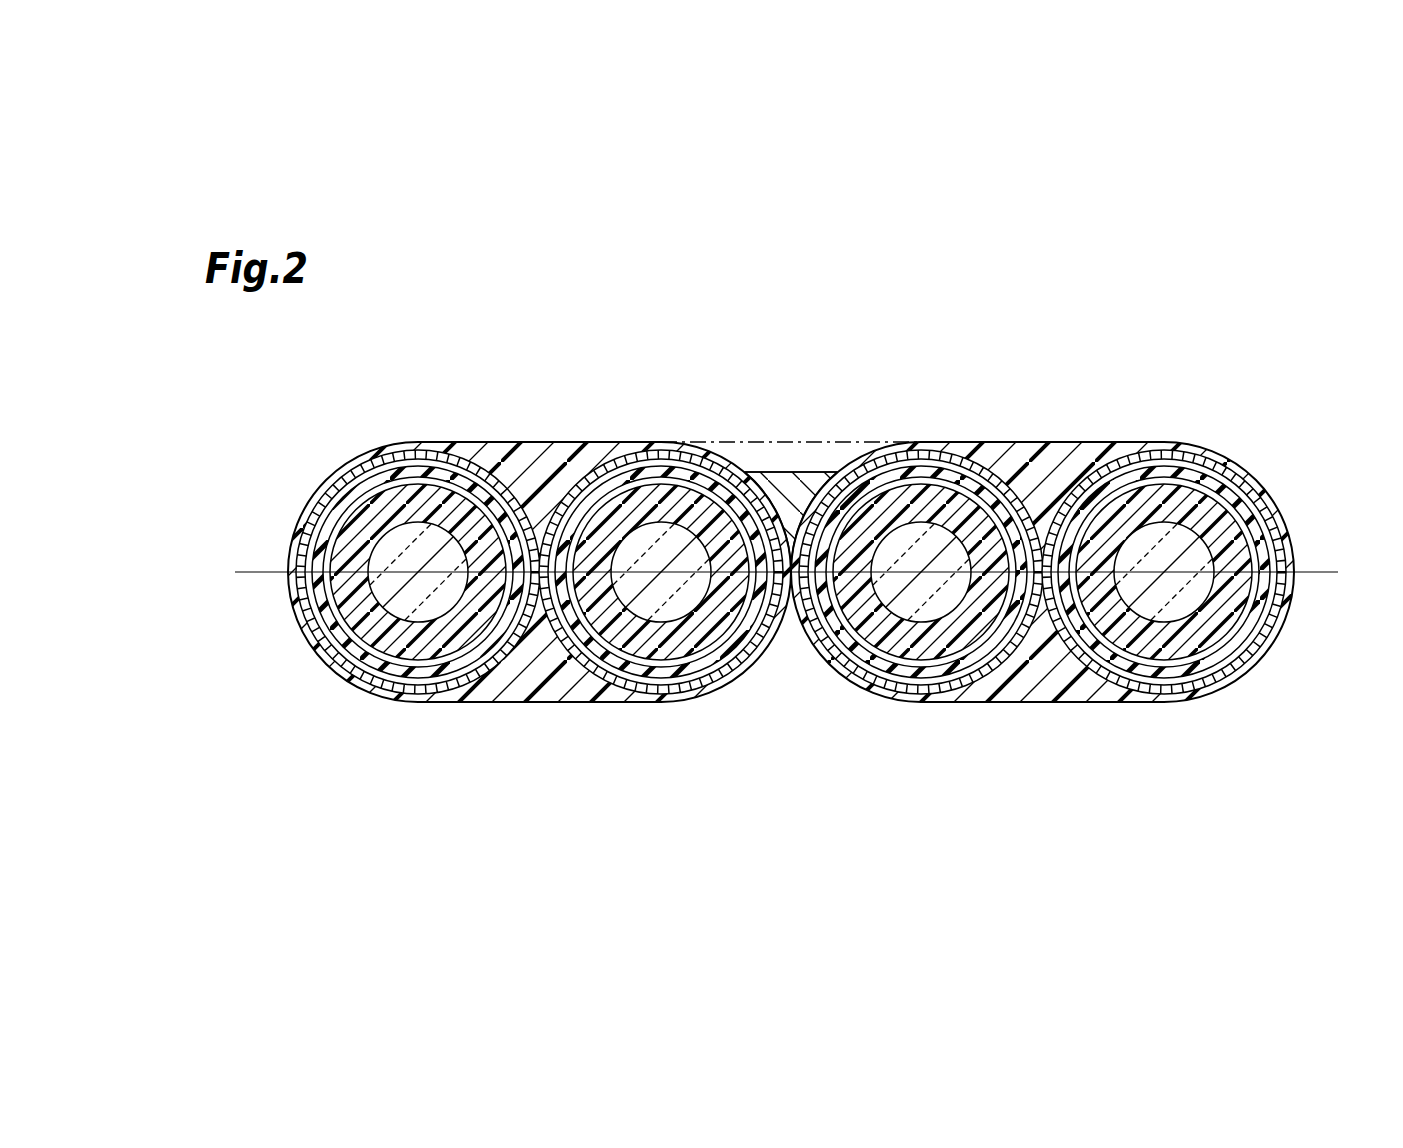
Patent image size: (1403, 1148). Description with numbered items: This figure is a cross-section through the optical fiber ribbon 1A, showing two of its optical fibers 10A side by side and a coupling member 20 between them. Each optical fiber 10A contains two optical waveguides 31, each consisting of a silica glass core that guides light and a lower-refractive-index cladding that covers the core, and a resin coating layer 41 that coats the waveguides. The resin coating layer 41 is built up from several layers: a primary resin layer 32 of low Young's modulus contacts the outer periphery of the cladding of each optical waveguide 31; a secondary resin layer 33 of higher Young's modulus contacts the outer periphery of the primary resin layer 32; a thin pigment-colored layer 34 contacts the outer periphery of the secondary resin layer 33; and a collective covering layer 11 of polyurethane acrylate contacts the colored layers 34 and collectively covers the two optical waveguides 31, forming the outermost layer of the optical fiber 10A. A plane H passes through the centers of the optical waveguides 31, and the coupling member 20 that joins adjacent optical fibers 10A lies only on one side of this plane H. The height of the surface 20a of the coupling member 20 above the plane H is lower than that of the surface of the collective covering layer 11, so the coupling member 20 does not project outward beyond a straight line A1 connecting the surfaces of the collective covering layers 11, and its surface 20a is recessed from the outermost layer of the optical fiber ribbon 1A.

The optical fiber ribbon 1A is at (1222, 350).
The optical fiber 10A is at (791, 553).
The collective covering layer 11 is at (1026, 452).
The coupling member 20 is at (797, 470).
The surface of the coupling member 20a is at (779, 447).
The straight line A1 is at (745, 440).
The optical waveguide 31 is at (422, 618).
The primary resin layer 32 is at (608, 393).
The secondary resin layer 33 is at (657, 452).
The colored layer 34 is at (630, 452).
The resin coating layer 41 is at (791, 553).
The plane H is at (1320, 568).